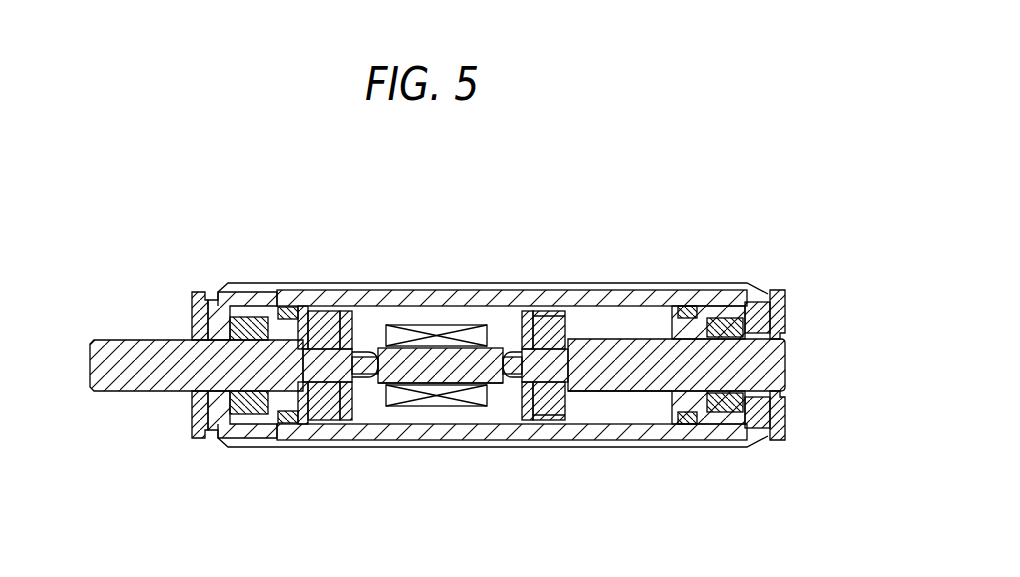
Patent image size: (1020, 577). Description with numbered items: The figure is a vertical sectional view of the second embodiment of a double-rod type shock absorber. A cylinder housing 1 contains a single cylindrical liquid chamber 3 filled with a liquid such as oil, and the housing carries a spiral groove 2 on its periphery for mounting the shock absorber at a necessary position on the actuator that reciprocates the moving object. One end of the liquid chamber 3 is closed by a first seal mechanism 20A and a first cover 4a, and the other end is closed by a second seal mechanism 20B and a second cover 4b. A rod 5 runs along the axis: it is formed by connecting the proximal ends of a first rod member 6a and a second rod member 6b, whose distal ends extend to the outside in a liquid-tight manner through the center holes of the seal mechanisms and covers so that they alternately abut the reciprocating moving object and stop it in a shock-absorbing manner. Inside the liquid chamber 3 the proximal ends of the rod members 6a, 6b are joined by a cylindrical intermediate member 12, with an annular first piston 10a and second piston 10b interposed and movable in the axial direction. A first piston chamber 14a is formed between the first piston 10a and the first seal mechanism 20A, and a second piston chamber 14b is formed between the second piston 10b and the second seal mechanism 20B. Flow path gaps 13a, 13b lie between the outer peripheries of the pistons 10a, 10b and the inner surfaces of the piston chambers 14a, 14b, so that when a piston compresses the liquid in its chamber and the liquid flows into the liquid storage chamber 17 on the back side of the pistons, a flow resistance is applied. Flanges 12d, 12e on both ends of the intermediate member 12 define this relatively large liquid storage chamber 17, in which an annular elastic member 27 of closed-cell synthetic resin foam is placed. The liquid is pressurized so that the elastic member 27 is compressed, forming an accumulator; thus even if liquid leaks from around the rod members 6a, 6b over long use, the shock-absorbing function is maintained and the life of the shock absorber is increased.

The cylinder housing 1 is at (618, 298).
The spiral groove 2 is at (650, 283).
The liquid chamber 3 is at (597, 396).
The first cover 4a is at (196, 292).
The second cover 4b is at (772, 291).
The rod 5 is at (168, 409).
The first rod member 6a is at (138, 340).
The second rod member 6b is at (763, 363).
The first piston 10a is at (322, 311).
The second piston 10b is at (548, 311).
The intermediate member 12 is at (450, 362).
The flange 12d is at (347, 311).
The flange 12e is at (527, 311).
The flow path gap 13a is at (322, 425).
The flow path gap 13b is at (552, 418).
The first piston chamber 14a is at (310, 425).
The second piston chamber 14b is at (642, 405).
The liquid storage chamber 17 is at (435, 325).
The first seal mechanism 20A is at (257, 303).
The second seal mechanism 20B is at (717, 305).
The annular elastic member 27 is at (453, 398).